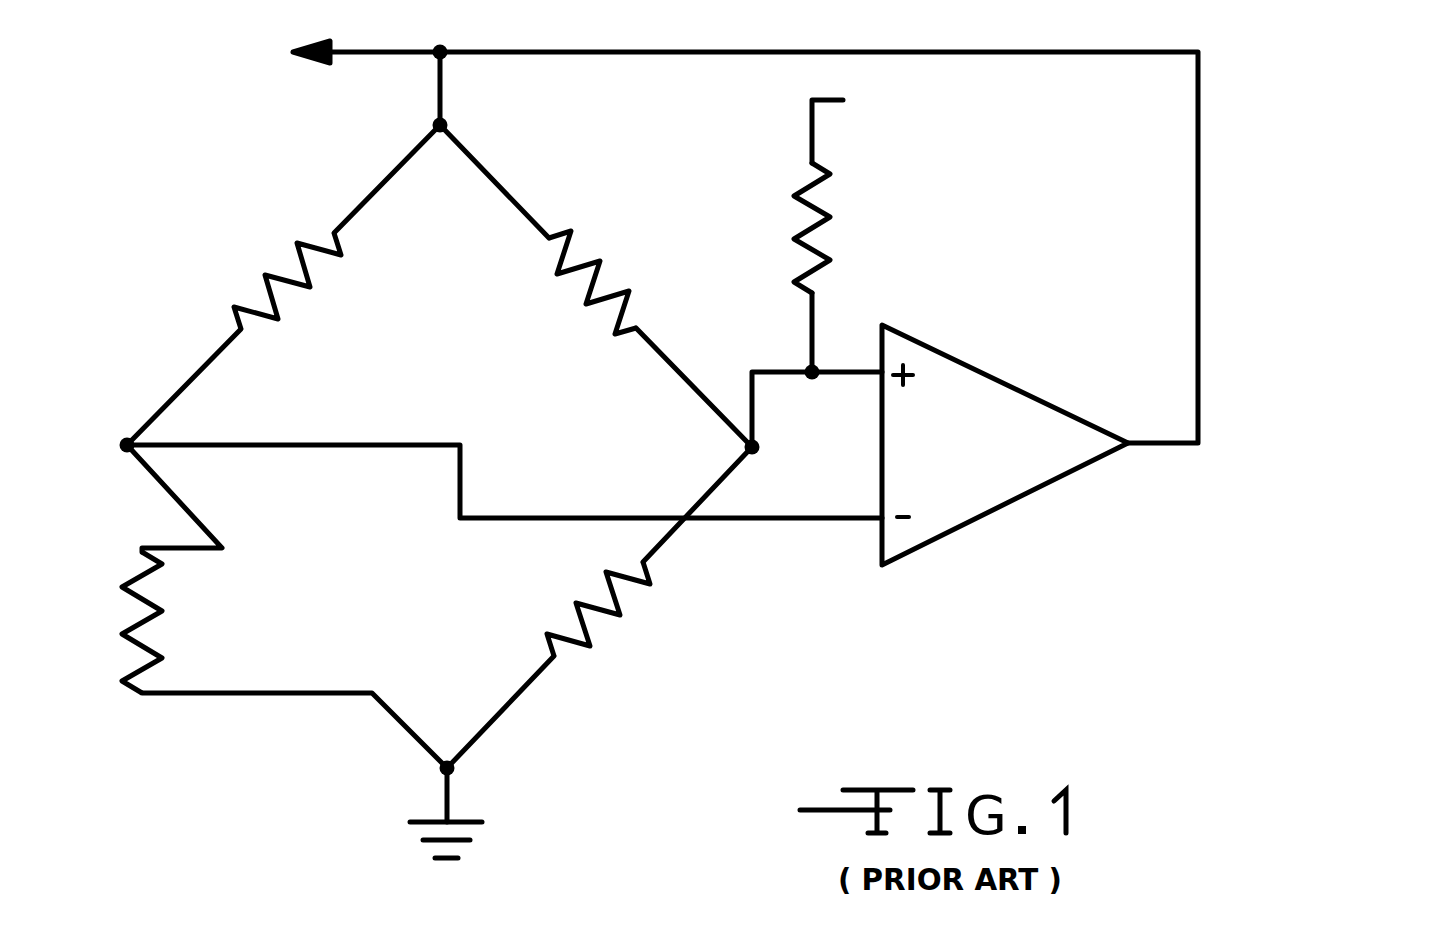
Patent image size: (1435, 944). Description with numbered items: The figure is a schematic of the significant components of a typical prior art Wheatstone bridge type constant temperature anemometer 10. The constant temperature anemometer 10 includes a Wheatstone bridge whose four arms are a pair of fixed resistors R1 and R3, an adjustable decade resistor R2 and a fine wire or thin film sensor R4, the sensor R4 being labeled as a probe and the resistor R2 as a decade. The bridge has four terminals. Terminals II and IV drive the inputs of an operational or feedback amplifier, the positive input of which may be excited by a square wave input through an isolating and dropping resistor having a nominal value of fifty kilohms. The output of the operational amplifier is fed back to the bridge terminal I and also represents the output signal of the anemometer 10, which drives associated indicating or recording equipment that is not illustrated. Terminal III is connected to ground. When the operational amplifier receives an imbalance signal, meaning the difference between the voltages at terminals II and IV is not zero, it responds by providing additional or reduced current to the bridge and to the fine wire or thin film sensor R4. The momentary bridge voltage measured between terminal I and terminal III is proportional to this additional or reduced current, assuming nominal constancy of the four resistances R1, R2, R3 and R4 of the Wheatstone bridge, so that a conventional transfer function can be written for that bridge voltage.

The constant temperature anemometer 10 is at (760, 443).
The fixed resistor R1 is at (616, 269).
The adjustable decade resistor R2 is at (720, 626).
The fixed resistor R3 is at (273, 262).
The fine wire or thin film sensor R4 is at (269, 622).
The bridge terminal I is at (483, 126).
The terminal II is at (113, 463).
The bridge terminal III is at (532, 799).
The terminal IV is at (770, 427).